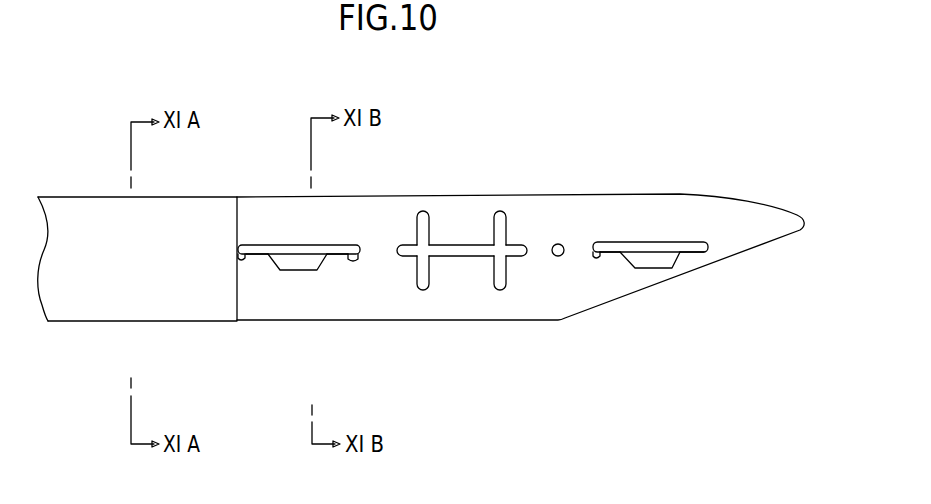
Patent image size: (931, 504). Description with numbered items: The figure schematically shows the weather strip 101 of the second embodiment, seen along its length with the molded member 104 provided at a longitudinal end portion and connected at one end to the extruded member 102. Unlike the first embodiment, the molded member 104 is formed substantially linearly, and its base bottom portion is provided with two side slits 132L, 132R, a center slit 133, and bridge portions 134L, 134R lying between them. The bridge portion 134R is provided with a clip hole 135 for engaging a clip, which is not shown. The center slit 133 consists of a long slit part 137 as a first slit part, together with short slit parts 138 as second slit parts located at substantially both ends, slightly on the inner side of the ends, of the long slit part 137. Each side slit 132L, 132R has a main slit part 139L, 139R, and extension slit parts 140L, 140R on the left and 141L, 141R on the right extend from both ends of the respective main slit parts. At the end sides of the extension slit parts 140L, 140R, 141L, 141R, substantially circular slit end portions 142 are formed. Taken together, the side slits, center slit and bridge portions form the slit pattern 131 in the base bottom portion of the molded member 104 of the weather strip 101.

The weather strip 101 is at (421, 197).
The extruded member 102 is at (62, 197).
The molded member 104 is at (672, 193).
The antenna pattern 131 is at (466, 339).
The side slit 132L is at (261, 319).
The side slit 132R is at (682, 324).
The center slit 133 is at (466, 309).
The bridge portion 134L is at (373, 253).
The bridge portion 134R is at (537, 253).
The clip hole 135 is at (563, 244).
The long slit part 137 is at (458, 257).
The short slit part 138 is at (535, 362).
The main slit part 139L is at (296, 271).
The main slit part 139R is at (650, 270).
The extension slit part 140L is at (263, 256).
The extension slit part 140R is at (315, 304).
The extension slit part 141L is at (615, 253).
The extension slit part 141R is at (735, 306).
The slit end portion 142 is at (240, 260).